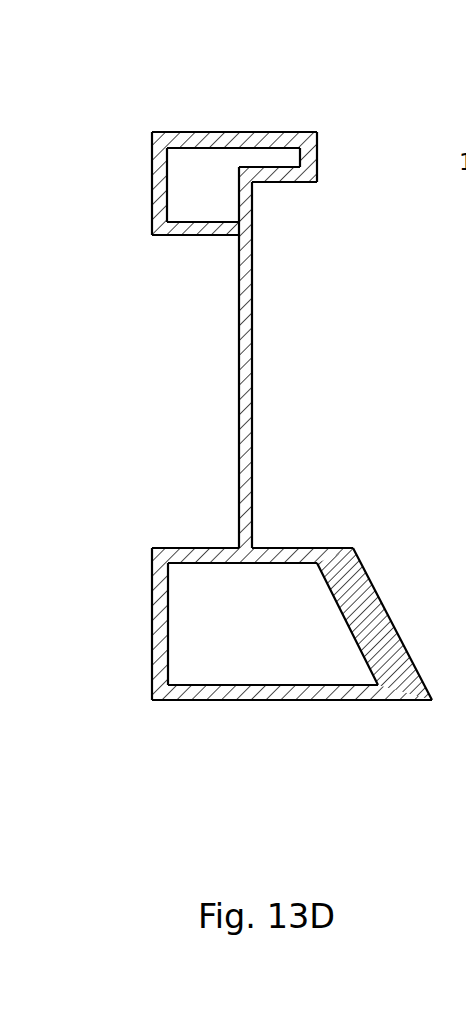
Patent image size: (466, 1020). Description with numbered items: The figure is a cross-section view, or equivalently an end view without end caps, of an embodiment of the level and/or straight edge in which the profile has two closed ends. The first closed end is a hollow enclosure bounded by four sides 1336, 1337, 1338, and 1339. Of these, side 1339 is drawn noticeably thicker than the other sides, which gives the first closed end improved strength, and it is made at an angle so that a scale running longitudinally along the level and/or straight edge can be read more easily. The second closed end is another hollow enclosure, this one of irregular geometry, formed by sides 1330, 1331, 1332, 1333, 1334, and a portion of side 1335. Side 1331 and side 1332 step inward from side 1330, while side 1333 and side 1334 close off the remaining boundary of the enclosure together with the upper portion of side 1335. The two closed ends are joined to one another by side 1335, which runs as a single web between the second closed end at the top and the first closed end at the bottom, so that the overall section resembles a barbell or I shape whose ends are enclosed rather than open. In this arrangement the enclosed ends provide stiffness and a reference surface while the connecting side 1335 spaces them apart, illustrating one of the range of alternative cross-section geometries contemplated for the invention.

The side 1330 is at (225, 132).
The side 1331 is at (313, 157).
The side 1332 is at (273, 182).
The side 1333 is at (153, 175).
The side 1334 is at (203, 237).
The side 1335 is at (252, 345).
The side 1336 is at (197, 548).
The side 1337 is at (160, 620).
The side 1338 is at (355, 690).
The side 1339 is at (362, 560).